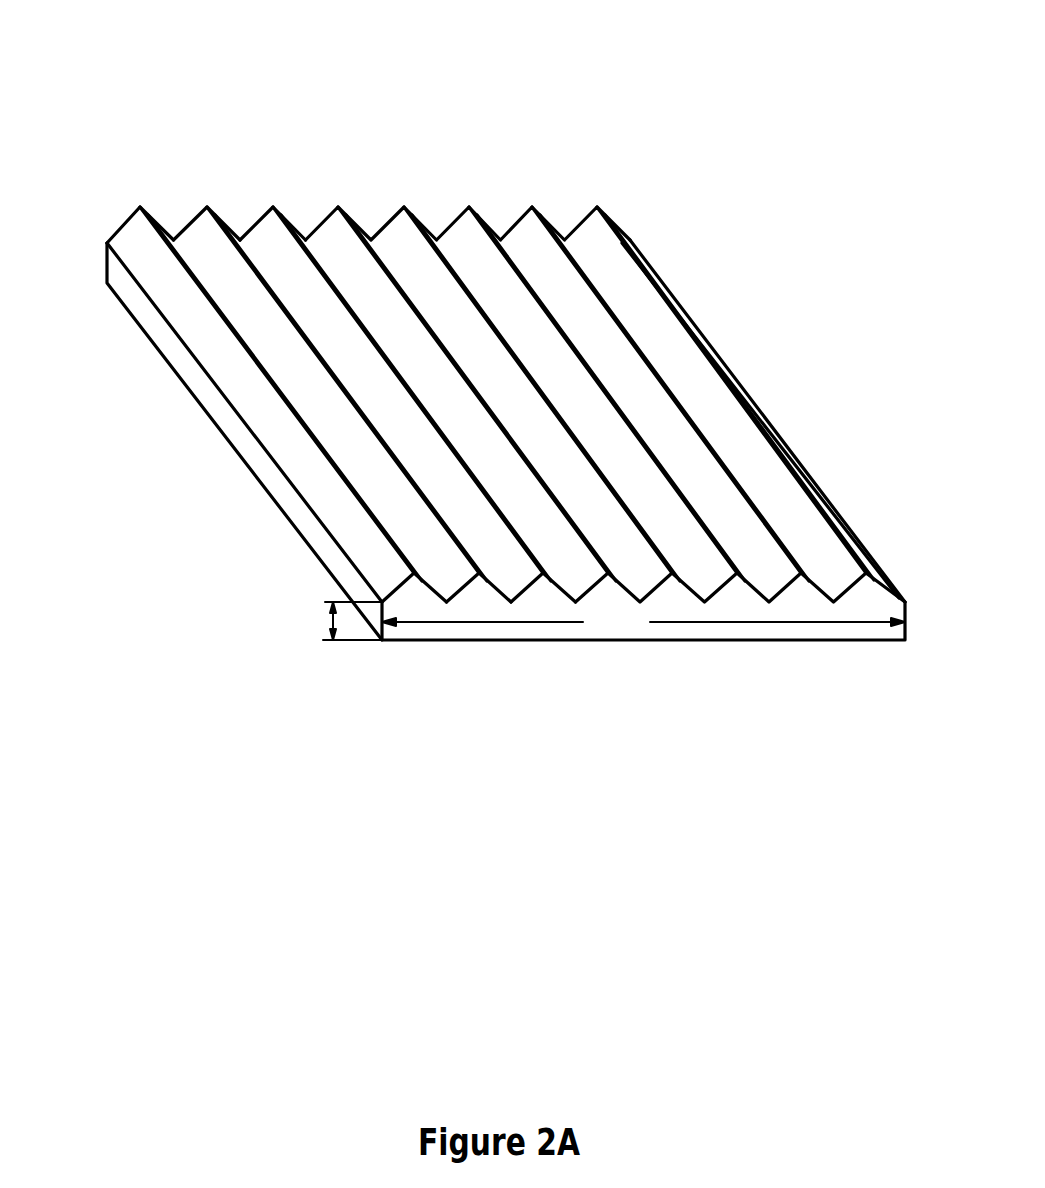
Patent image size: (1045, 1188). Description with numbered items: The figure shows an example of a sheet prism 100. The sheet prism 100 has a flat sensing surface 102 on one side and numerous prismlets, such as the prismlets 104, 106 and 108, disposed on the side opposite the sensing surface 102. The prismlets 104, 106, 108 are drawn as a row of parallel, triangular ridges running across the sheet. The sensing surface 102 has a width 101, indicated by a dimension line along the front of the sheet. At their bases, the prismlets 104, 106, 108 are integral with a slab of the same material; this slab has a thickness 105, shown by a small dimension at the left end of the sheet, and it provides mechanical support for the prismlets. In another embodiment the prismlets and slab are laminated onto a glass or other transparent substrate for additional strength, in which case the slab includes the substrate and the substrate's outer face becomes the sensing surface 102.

The sheet prism 100 is at (471, 414).
The width 101 is at (643, 617).
The sensing surface 102 is at (506, 513).
The prismlet 104 is at (242, 354).
The thickness 105 is at (309, 649).
The prismlet 106 is at (334, 323).
The prismlet 108 is at (408, 353).